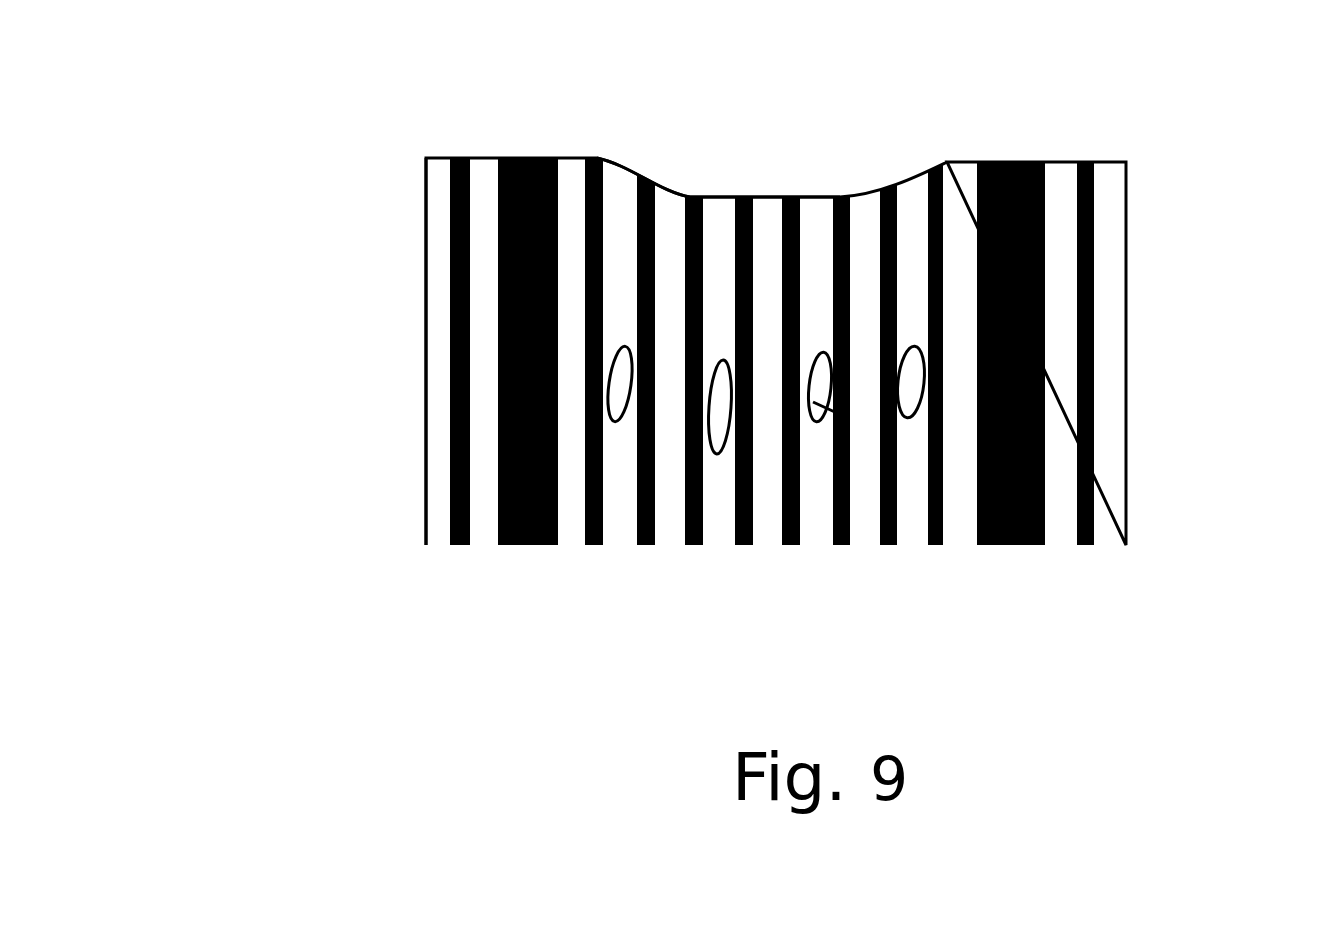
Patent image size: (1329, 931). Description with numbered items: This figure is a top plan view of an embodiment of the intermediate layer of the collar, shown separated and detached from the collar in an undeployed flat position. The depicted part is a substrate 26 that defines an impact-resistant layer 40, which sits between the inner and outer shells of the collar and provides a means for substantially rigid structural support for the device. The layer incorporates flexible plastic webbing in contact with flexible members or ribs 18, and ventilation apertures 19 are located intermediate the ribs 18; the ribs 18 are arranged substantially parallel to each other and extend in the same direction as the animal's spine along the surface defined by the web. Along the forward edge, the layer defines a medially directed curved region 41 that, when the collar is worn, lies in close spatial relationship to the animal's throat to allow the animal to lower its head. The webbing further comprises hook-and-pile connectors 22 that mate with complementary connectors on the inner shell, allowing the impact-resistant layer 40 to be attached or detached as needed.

The substrate 26 is at (250, 201).
The impact-resistant layer 40 is at (438, 260).
The hook-and-pile connectors 22 is at (538, 157).
The medially directed curved region 41 is at (755, 185).
The fibers 18 is at (790, 540).
The ventilation apertures 19 is at (727, 417).